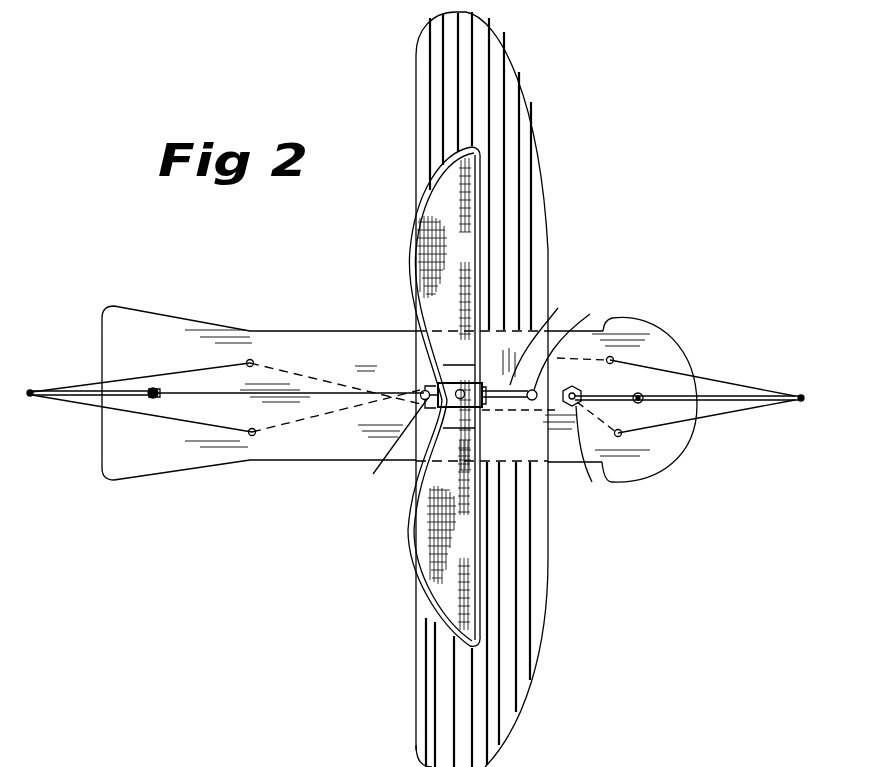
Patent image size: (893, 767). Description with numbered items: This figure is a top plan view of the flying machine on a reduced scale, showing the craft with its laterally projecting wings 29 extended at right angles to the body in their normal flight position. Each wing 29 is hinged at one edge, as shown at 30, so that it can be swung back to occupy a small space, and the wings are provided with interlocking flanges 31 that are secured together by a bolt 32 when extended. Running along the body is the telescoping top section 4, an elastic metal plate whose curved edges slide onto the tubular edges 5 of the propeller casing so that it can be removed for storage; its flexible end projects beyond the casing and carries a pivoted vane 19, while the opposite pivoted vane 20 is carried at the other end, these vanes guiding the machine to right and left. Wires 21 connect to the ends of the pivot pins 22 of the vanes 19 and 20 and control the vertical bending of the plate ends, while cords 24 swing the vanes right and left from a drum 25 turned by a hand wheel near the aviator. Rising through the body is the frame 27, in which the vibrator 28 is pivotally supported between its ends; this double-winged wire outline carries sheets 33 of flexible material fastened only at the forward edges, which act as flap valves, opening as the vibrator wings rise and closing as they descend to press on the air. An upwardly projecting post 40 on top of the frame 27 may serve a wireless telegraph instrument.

The telescoping top section 4 is at (653, 458).
The tubular edges of the propeller casing 5 is at (305, 455).
The pivoted vane 19 is at (768, 380).
The pivoted vane 20 is at (72, 390).
The wires 21 is at (178, 395).
The pivot pins 22 is at (160, 394).
The cords 24 is at (142, 371).
The drum 25 is at (594, 446).
The frame 27 is at (487, 407).
The vibrator 28 is at (478, 195).
The wings 29 is at (548, 207).
The hinge 30 is at (383, 449).
The interlocking flanges 31 is at (536, 344).
The bolt 32 is at (581, 342).
The sheets of flexible material 33 is at (437, 253).
The post 40 is at (453, 388).